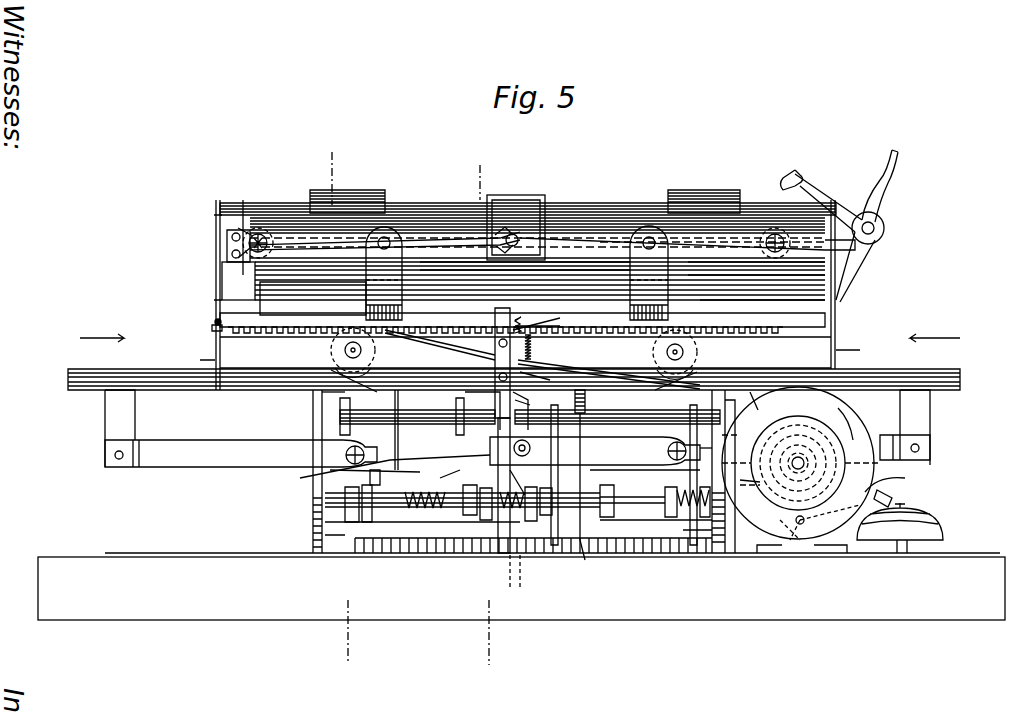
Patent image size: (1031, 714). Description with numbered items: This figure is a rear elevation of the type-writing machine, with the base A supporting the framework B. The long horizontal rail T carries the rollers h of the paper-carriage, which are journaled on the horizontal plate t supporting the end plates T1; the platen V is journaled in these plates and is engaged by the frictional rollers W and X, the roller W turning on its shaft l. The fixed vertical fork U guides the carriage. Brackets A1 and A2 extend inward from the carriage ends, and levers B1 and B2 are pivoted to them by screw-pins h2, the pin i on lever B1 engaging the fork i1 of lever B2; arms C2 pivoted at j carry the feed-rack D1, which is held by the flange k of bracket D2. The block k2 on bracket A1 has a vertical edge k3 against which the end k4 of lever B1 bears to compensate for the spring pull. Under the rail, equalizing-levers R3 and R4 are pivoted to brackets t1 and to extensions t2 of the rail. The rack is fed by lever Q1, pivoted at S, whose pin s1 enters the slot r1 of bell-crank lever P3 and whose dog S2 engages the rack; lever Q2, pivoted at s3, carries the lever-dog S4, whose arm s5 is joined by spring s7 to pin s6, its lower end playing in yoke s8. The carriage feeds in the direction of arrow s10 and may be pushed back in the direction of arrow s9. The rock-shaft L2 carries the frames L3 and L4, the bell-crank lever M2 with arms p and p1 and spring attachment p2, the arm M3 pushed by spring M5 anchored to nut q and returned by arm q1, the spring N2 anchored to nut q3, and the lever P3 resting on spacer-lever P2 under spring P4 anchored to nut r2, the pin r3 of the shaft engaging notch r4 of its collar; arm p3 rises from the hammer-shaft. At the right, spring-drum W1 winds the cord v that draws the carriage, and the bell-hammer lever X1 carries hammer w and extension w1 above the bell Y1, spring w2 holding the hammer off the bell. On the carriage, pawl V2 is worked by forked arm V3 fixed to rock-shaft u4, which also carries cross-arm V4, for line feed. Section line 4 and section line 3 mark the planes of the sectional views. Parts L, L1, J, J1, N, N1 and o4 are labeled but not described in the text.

The section line 4- 4 is at (337, 409).
The section line 3- 3 is at (485, 414).
The base A is at (521, 588).
The shaft of friction-roller l is at (418, 212).
The frictional roller W is at (525, 192).
The fixed vertical fork U is at (516, 227).
The rotary cylindrical platen V is at (537, 257).
The lever B1 is at (537, 242).
The lever B2 is at (712, 242).
The bracket A1 is at (226, 248).
The vertical inner edge k3 is at (239, 228).
The end of lever k4 is at (238, 281).
The block k2 is at (228, 262).
The screw-pin h2 is at (262, 250).
The pivot j is at (384, 250).
The downwardly-extending arm C2 is at (517, 290).
The frictional roller X is at (542, 288).
The lateral pin i is at (385, 240).
The fork or yoke i1 is at (515, 247).
The pawl V2 is at (800, 176).
The forked arm V3 is at (828, 204).
The cross-arm V4 is at (870, 197).
The rock-shaft u4 is at (876, 228).
The bracket A2 is at (850, 252).
The carriage feed-rack D1 is at (590, 322).
The horizontal plate t is at (525, 352).
The roller h is at (698, 368).
The horizontal rail T is at (168, 360).
The end plate T1 is at (218, 340).
The cord v is at (481, 369).
The arrow s10 is at (102, 329).
The arrow s9 is at (935, 329).
The pivot S is at (497, 358).
The dog or nib S2 is at (520, 325).
The lever-dog S4 is at (544, 311).
The arm of lever-dog s5 is at (533, 345).
The pivot s3 is at (549, 339).
The coil expansion-spring s7 is at (609, 368).
The pin s6 is at (545, 376).
The yoke s8 is at (531, 409).
The lateral pin s1 is at (525, 462).
The downward extension t2 is at (517, 428).
The equalizing-lever R3 is at (241, 453).
The framework B is at (313, 410).
The inward flange k is at (318, 393).
The post L is at (403, 412).
The post L1 is at (624, 466).
The rail J is at (417, 413).
The rail J1 is at (617, 409).
The arm p3 is at (409, 430).
The bracket D2 is at (482, 406).
The lever Q1 is at (507, 472).
The second lever Q2 is at (489, 438).
The coil-spring attachment p2 is at (595, 397).
The equalizing-lever R4 is at (595, 451).
The slot r1 is at (706, 461).
The bracket t1 is at (387, 474).
The arm q1 is at (372, 480).
The upwardly-extending arm M3 is at (383, 466).
The bell-crank lever M2 is at (645, 479).
The collar N is at (335, 540).
The collar N1 is at (543, 496).
The coil tension-spring N2 is at (684, 494).
The bell-crank lever P3 is at (518, 535).
The spacer-lever P2 is at (500, 581).
The coil tension-spring P4 is at (470, 515).
The upwardly-extending arm p1 is at (588, 493).
The laterally-extending arm p is at (587, 563).
The horizontal rock-shaft L2 is at (632, 490).
The rectangular frame L3 is at (370, 528).
The frame L4 is at (345, 537).
The nut q is at (462, 516).
The coil-spring M5 is at (425, 508).
The adjustable nut r2 is at (484, 513).
The lateral pin r3 is at (524, 504).
The notch r4 is at (553, 513).
The nut q3 is at (735, 476).
The spring-drum W1 is at (801, 470).
The pin o4 is at (746, 477).
The hammer w is at (893, 498).
The upward extension w1 is at (779, 523).
The spring w2 is at (830, 523).
The bell-hammer lever X1 is at (893, 479).
The bell Y1 is at (910, 528).